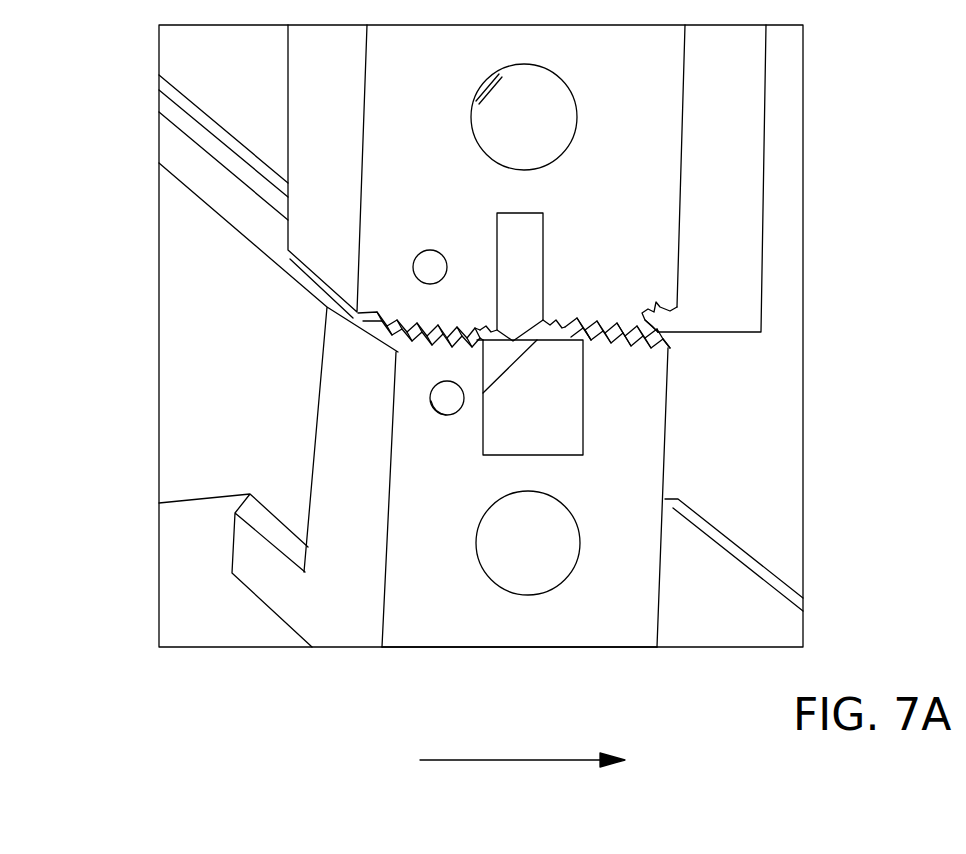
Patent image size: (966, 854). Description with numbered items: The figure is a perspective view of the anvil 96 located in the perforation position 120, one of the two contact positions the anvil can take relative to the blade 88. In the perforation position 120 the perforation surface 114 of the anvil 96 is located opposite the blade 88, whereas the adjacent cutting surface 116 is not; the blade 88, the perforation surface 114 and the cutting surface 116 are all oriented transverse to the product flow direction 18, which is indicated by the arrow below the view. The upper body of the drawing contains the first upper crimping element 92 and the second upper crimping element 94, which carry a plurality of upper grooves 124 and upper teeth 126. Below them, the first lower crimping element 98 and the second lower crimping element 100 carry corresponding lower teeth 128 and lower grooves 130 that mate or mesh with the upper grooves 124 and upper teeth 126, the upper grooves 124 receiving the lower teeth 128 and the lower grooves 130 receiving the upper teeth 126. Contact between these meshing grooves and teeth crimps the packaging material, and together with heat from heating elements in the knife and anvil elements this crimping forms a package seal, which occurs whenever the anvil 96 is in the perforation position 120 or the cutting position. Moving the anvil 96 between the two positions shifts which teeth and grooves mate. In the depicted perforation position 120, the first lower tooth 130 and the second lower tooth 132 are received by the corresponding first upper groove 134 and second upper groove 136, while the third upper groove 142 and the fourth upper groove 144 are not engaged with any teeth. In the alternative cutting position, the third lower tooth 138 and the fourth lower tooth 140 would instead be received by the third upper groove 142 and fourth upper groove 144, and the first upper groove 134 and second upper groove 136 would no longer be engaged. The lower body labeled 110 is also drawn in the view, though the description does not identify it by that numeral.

The product flow direction 18 is at (507, 760).
The blade 88 is at (513, 328).
The first upper crimping element 92 is at (603, 318).
The second upper crimping element 94 is at (407, 317).
The anvil 96 is at (578, 456).
The first lower crimping element 98 is at (632, 352).
The second lower crimping element 100 is at (415, 368).
The lower body 110 is at (474, 343).
The perforation surface 114 is at (490, 346).
The cutting surface 116 is at (560, 347).
The perforation position 120 is at (826, 320).
The upper grooves 124 is at (659, 323).
The upper teeth 126 is at (673, 308).
The lower teeth 128 is at (673, 346).
The first lower tooth 130 is at (645, 348).
The second lower tooth 132 is at (465, 405).
The first upper groove 134 is at (457, 317).
The second upper groove 136 is at (487, 331).
The third lower tooth 138 is at (595, 342).
The fourth lower tooth 140 is at (617, 343).
The third upper groove 142 is at (550, 318).
The fourth upper groove 144 is at (580, 321).